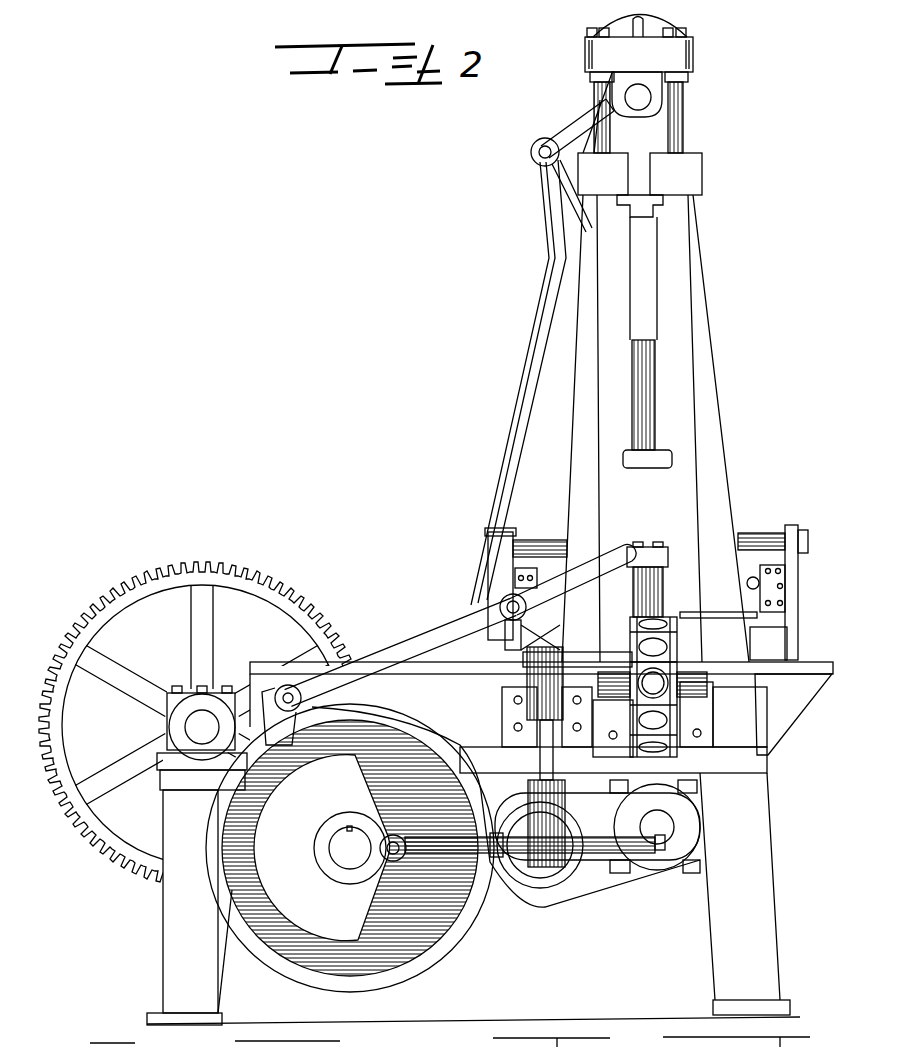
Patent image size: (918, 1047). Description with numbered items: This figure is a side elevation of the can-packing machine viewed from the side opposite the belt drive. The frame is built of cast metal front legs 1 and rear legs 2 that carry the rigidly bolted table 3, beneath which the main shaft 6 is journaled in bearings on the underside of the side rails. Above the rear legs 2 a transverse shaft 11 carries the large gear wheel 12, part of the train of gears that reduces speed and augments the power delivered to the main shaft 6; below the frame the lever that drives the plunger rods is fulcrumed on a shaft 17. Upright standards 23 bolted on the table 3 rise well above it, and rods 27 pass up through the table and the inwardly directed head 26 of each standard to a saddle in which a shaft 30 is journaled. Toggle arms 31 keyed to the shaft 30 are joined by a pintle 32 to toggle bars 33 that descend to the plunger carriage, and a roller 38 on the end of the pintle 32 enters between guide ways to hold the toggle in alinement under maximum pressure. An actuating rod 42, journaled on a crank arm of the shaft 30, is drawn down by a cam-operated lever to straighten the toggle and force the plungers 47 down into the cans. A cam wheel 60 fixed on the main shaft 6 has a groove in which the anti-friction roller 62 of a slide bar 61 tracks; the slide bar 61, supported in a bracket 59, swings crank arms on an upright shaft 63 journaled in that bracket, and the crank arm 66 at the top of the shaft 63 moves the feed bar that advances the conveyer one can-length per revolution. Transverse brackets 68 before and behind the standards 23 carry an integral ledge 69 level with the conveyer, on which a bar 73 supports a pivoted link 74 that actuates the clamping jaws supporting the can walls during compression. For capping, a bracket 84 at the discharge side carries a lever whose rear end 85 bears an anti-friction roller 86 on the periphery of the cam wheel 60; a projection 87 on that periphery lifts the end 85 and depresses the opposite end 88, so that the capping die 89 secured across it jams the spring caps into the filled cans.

The front legs 1 is at (755, 886).
The rear legs 2 is at (173, 919).
The table 3 is at (740, 730).
The main shaft 6 is at (345, 852).
The shaft 11 is at (195, 725).
The gear wheel 12 is at (110, 600).
The shaft 17 is at (550, 870).
The standards 23 is at (716, 428).
The head 26 is at (684, 172).
The rods 27 is at (676, 130).
The shaft 30 is at (651, 97).
The toggle arms 31 is at (572, 128).
The shaft or pintle 32 is at (541, 139).
The toggle bars 33 is at (560, 180).
The roller 38 is at (531, 155).
The actuating rod 42 is at (503, 457).
The plungers 47 is at (652, 412).
The bracket 59 is at (593, 810).
The cam wheel 60 is at (440, 948).
The slide bar 61 is at (482, 870).
The anti-friction roller 62 is at (432, 916).
The upright shaft 63 is at (510, 740).
The crank arm 66 is at (553, 548).
The brackets 68 is at (489, 578).
The ledge or shelf 69 is at (771, 630).
The bar or beam 73 is at (512, 578).
The link 74 is at (748, 581).
The bracket 84 is at (455, 618).
The lever end 85 is at (393, 650).
The anti-friction roller 86 is at (283, 686).
The projection 87 is at (330, 683).
The lever end 88 is at (655, 546).
The capping die 89 is at (662, 556).